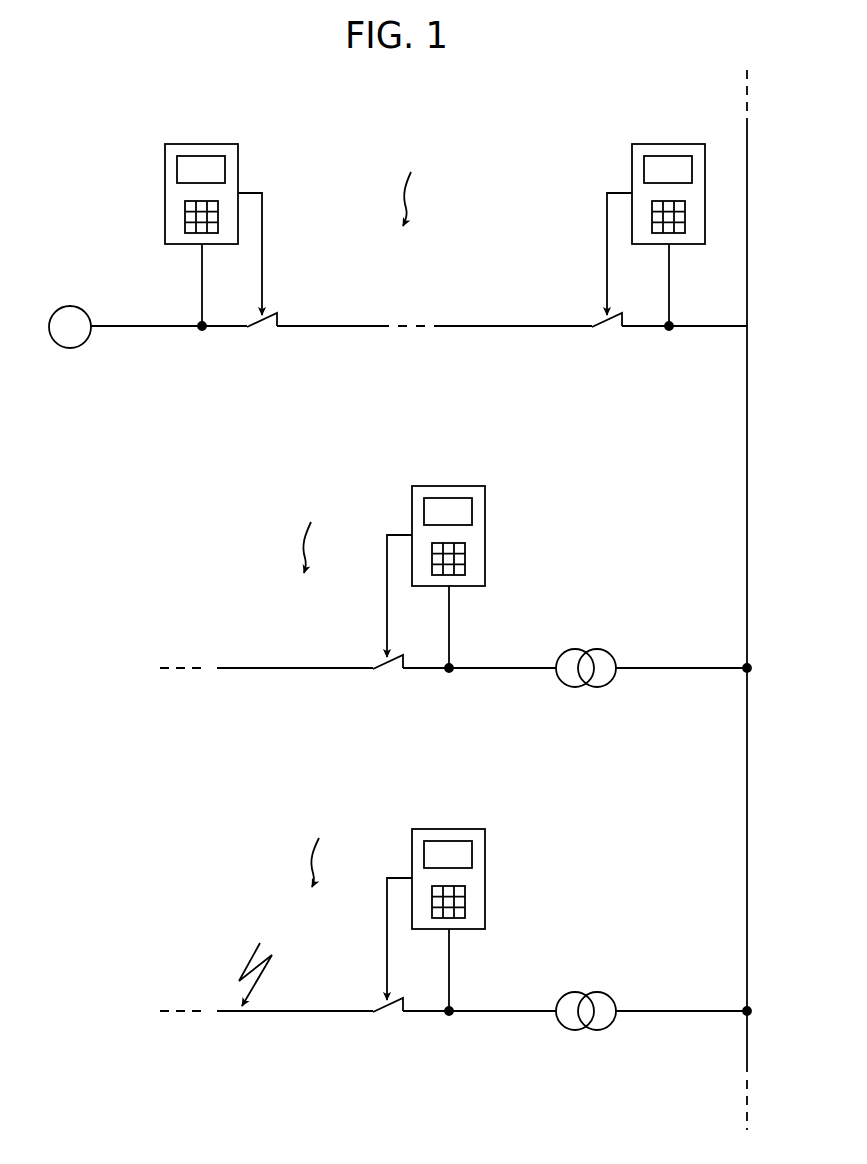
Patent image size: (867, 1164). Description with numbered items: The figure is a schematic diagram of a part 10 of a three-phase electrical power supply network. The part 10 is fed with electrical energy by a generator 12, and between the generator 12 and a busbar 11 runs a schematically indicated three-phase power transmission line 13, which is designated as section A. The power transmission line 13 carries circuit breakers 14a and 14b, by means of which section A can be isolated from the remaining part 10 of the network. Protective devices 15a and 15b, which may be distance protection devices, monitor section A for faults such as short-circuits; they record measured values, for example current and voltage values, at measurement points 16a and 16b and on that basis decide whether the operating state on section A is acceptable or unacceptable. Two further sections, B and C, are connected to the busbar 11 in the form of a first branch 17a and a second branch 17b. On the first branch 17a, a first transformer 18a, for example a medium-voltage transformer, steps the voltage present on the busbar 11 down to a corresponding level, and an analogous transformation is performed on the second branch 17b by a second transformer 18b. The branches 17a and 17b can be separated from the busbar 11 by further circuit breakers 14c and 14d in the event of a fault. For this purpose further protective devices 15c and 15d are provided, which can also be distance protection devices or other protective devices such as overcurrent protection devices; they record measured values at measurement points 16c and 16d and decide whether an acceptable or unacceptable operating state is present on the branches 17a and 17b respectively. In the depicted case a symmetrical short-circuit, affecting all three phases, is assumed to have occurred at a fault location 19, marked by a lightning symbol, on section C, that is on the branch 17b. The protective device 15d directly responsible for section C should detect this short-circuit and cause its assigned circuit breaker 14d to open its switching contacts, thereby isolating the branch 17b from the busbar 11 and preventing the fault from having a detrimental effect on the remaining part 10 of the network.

The part of the electrical power supply network 10 is at (118, 500).
The busbar 11 is at (747, 497).
The generator 12 is at (70, 305).
The power transmission line 13 is at (530, 325).
The circuit breaker 14a is at (264, 339).
The circuit breaker 14b is at (605, 339).
The circuit breaker 14c is at (383, 681).
The circuit breaker 14d is at (383, 1023).
The protective device 15a is at (201, 143).
The protective device 15b is at (670, 143).
The protective device 15c is at (486, 535).
The protective device 15d is at (486, 878).
The measurement point 16a is at (203, 331).
The measurement point 16b is at (669, 331).
The measurement point 16c is at (450, 672).
The measurement point 16d is at (450, 1015).
The first branch 17a is at (686, 667).
The second branch 17b is at (686, 1010).
The first transformer 18a is at (596, 649).
The second transformer 18b is at (596, 991).
The fault location 19 is at (240, 1022).